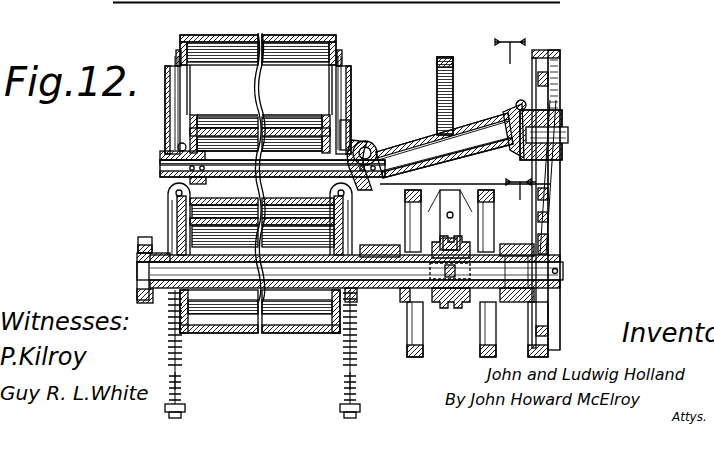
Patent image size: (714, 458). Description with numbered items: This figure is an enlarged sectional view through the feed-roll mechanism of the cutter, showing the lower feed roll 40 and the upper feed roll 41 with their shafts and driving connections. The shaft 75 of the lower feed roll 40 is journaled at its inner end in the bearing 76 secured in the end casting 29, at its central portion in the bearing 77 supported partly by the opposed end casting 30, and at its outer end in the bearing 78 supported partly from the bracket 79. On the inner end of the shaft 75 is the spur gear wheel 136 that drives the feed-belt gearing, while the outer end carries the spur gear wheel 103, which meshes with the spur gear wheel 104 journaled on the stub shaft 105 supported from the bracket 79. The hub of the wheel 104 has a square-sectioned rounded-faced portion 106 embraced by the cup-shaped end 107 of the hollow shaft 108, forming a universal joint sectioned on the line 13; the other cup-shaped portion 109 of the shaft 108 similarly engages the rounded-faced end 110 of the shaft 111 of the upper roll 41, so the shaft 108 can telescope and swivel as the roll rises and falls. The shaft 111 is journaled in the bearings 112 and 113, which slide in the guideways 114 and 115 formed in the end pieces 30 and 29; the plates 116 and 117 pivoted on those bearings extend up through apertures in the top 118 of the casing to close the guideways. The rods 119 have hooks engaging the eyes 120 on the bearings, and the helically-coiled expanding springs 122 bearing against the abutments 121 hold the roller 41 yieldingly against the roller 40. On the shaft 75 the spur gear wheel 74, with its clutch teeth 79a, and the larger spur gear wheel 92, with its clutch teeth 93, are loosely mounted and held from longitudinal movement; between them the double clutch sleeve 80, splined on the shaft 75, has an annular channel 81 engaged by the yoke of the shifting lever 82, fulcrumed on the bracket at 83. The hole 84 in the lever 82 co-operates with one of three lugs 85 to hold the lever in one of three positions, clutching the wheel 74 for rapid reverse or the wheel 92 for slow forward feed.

The section line 13 is at (515, 117).
The two-part end casting 29 is at (170, 215).
The opposed two-part end casting 30 is at (340, 220).
The lower feed roll 40 is at (301, 310).
The upper feed roll 41 is at (282, 120).
The spur gear wheel 74 is at (415, 357).
The shaft 75 is at (232, 282).
The bearing 76 is at (152, 256).
The bearing 77 is at (368, 248).
The bearing 78 is at (514, 298).
The bracket 79 is at (558, 60).
The clutch teeth 79a is at (412, 290).
The double clutch sleeve 80 is at (451, 285).
The annular channel 81 is at (438, 290).
The shifting lever 82 is at (444, 57).
The fulcrum 83 is at (479, 210).
The hole 84 is at (450, 209).
The lugs 85 is at (416, 210).
The larger spur gear wheel 92 is at (486, 357).
The clutch teeth 93 is at (452, 290).
The spur gear wheel 103 is at (540, 318).
The spur gear wheel 104 is at (548, 182).
The stub shaft 105 is at (552, 135).
The square hub portion 106 is at (517, 101).
The cup-shaped end 107 is at (506, 112).
The hollow shaft 108 is at (416, 150).
The cup-shaped portion 109 is at (370, 142).
The rounded-faced end 110 is at (352, 146).
The shaft 111 is at (222, 135).
The bearing 112 is at (345, 128).
The bearing 113 is at (178, 147).
The guideway 114 is at (342, 66).
The guideway 115 is at (168, 112).
The plate 116 is at (338, 66).
The plate 117 is at (176, 56).
The top of feed-roller casing 118 is at (312, 35).
The rods 119 is at (345, 340).
The eyes 120 is at (172, 190).
The abutments 121 is at (340, 410).
The helically-coiled expanding springs 122 is at (345, 372).
The spur gear wheel 136 is at (138, 242).